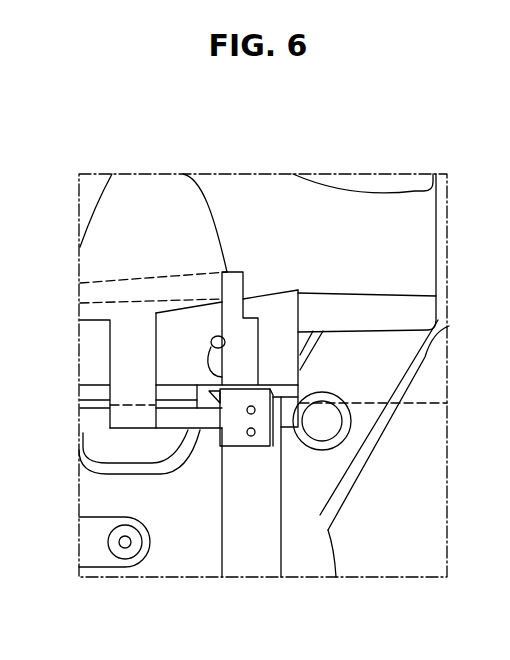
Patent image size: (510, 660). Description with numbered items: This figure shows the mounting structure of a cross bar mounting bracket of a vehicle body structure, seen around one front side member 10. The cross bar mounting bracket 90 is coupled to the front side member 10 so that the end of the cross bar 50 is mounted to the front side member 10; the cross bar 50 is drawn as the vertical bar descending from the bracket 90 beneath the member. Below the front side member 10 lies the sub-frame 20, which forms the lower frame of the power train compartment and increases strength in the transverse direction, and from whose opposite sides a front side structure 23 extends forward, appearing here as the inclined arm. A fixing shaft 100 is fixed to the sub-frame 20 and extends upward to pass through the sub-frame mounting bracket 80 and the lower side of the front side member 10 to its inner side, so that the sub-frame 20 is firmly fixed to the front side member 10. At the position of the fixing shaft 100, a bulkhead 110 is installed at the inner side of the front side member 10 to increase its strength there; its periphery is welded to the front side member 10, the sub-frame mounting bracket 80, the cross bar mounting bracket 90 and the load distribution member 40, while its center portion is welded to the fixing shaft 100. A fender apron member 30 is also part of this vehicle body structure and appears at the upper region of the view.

The front side member 10 is at (134, 312).
The sub-frame 20 is at (352, 509).
The front side structure 23 is at (360, 428).
The fender apron member 30 is at (387, 178).
The load distribution member 40 is at (233, 193).
The cross bar 50 is at (253, 557).
The sub-frame mounting bracket 80 is at (175, 408).
The cross bar mounting bracket 90 is at (262, 405).
The fixing shaft 100 is at (217, 360).
The bulkhead 110 is at (236, 312).